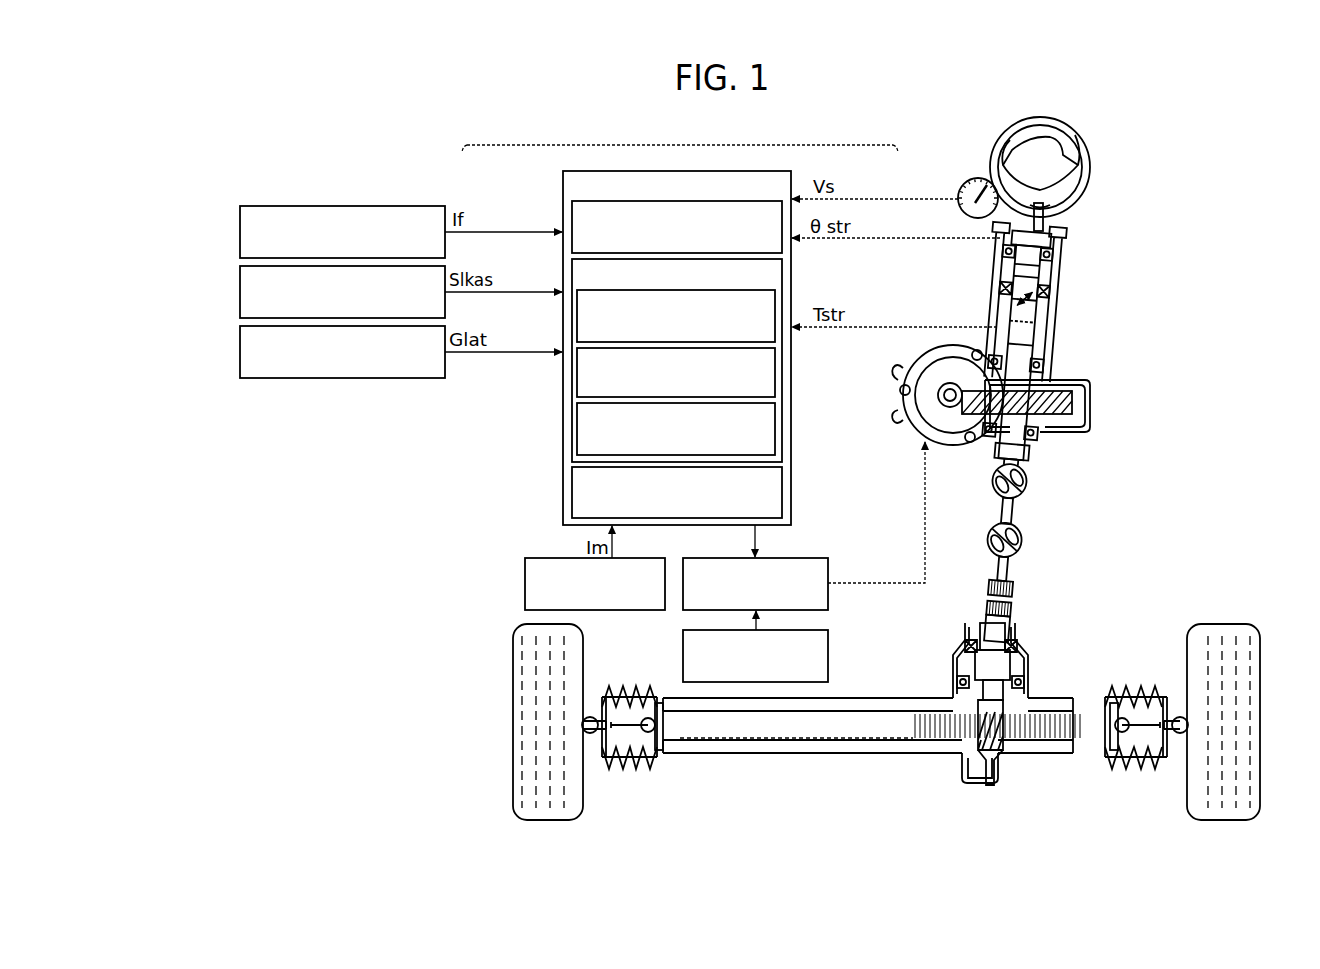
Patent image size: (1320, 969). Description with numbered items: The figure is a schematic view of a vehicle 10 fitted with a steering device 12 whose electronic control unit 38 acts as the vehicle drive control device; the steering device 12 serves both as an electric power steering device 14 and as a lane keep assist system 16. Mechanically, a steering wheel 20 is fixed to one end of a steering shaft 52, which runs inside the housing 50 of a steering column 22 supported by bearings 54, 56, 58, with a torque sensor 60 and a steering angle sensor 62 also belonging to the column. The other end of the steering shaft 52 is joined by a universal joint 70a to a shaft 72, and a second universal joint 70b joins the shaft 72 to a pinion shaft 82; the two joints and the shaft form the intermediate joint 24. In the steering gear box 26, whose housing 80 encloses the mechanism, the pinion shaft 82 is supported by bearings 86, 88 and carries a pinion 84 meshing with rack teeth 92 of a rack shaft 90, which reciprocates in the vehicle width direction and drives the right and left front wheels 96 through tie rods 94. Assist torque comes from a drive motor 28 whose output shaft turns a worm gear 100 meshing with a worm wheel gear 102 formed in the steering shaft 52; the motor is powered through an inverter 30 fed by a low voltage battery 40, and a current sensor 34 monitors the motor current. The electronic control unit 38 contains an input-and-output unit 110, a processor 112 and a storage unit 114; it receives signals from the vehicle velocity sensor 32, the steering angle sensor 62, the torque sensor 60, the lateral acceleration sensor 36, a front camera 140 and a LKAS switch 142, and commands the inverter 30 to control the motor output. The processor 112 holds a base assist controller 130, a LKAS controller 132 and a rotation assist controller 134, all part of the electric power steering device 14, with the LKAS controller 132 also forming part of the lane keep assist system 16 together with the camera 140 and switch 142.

The vehicle 10 is at (1163, 192).
The steering device 12 is at (715, 141).
The electric power steering device 14 is at (890, 186).
The lane keep assist system 16 is at (476, 191).
The steering wheel 20 is at (1000, 147).
The steering column 22 is at (1046, 301).
The intermediate joint 24 is at (1089, 512).
The steering gear box 26 is at (871, 722).
The drive motor 28 is at (929, 403).
The inverter 30 is at (828, 567).
The vehicle velocity sensor 32 is at (965, 183).
The current sensor 34 is at (632, 612).
The lateral acceleration sensor 36 is at (243, 340).
The electronic control unit 38 is at (563, 185).
The low voltage battery 40 is at (828, 638).
The housing 50 is at (1052, 431).
The steering shaft 52 is at (1053, 345).
The bearing 54 is at (1005, 253).
The bearing 56 is at (1052, 365).
The bearing 58 is at (1043, 440).
The torque sensor 60 is at (1050, 330).
The steering angle sensor 62 is at (1065, 238).
The universal joint 70a is at (1027, 485).
The universal joint 70b is at (1022, 538).
The shaft 72 is at (1014, 508).
The housing 80 is at (846, 755).
The pinion shaft 82 is at (1011, 605).
The pinion 84 is at (985, 786).
The bearing 86 is at (957, 682).
The bearing 88 is at (964, 765).
The rack shaft 90 is at (880, 755).
The rack teeth 92 is at (1032, 740).
The tie rods 94 is at (633, 732).
The front wheels 96 is at (525, 653).
The worm gear 100 is at (938, 395).
The worm wheel gear 102 is at (1090, 405).
The input-and-output unit 110 is at (572, 217).
The processor 112 is at (572, 266).
The storage unit 114 is at (572, 475).
The base assist controller 130 is at (577, 318).
The LKAS controller 132 is at (577, 382).
The rotation assist controller 134 is at (577, 415).
The front camera 140 is at (241, 218).
The LKAS switch 142 is at (243, 280).